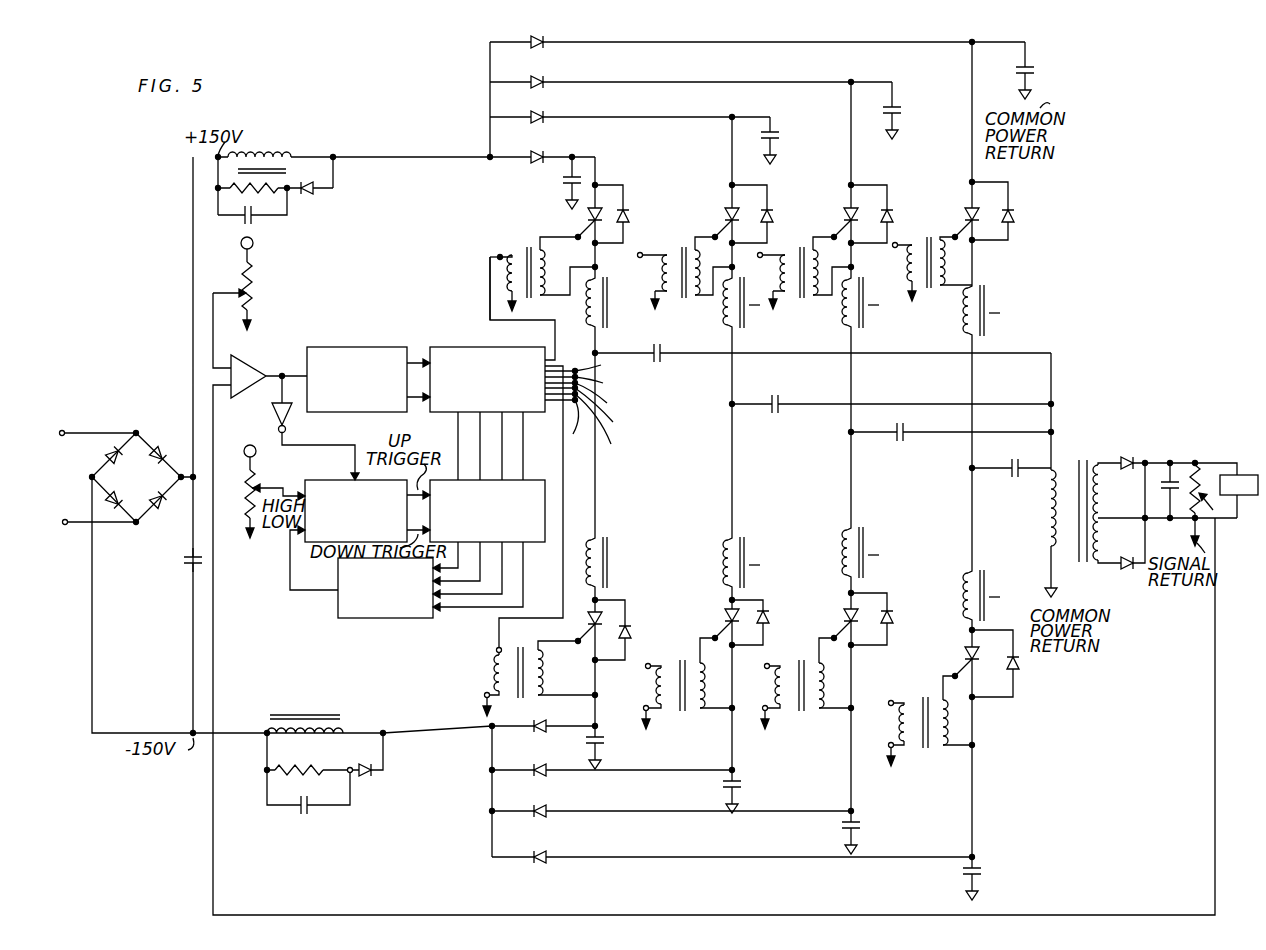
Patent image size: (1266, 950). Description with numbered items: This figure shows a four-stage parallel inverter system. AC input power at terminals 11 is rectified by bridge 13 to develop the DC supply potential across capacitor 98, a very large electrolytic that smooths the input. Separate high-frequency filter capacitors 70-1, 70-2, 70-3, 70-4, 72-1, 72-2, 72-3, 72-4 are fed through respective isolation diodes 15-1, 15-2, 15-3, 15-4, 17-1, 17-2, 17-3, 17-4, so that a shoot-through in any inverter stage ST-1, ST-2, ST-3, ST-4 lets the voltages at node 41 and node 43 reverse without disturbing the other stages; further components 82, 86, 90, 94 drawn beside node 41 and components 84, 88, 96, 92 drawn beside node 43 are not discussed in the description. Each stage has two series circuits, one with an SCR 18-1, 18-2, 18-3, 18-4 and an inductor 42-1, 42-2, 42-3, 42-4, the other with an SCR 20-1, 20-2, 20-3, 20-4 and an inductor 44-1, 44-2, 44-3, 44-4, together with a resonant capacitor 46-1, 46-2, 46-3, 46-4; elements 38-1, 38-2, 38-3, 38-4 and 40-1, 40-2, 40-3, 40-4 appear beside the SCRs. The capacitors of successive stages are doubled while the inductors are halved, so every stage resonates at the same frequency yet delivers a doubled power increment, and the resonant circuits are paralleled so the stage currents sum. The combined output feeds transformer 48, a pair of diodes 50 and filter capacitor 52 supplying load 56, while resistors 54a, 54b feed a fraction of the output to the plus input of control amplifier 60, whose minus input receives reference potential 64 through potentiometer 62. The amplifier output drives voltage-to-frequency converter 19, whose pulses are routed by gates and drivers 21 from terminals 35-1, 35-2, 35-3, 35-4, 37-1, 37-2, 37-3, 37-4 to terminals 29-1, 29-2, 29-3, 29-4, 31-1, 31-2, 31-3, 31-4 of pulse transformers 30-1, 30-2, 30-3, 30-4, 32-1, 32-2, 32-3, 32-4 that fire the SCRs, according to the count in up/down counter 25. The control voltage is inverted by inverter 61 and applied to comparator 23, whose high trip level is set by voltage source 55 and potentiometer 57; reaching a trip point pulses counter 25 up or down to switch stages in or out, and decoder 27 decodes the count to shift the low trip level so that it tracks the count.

The terminals 11 is at (58, 445).
The bridge 13 is at (145, 487).
The capacitor 98 is at (184, 560).
The transformer secondary winding 82 is at (268, 156).
The variable resistor 86 is at (272, 186).
The capacitor 90 is at (252, 226).
The diode 94 is at (314, 194).
The node 41 is at (334, 156).
The reference potential 64 is at (241, 244).
The variable potentiometer 62 is at (252, 293).
The difference amplifier 60 is at (260, 373).
The inverter 61 is at (288, 432).
The voltage source 55 is at (244, 448).
The potentiometer 57 is at (250, 489).
The voltage-to-frequency converter 19 is at (323, 346).
The gates and drivers 21 is at (445, 344).
The voltage comparator 23 is at (324, 478).
The up/down counter 25 is at (540, 478).
The decoder 27 is at (392, 618).
The transformer secondary winding 84 is at (328, 736).
The node 43 is at (383, 732).
The variable resistor 88 is at (312, 768).
The diode 96 is at (366, 777).
The capacitor 92 is at (306, 816).
The isolation diode 15-1 is at (531, 156).
The isolation diode 15-2 is at (531, 118).
The isolation diode 15-3 is at (531, 81).
The isolation diode 15-4 is at (531, 42).
The high-frequency filter capacitor 70-1 is at (582, 177).
The high-frequency filter capacitor 70-2 is at (774, 132).
The high-frequency filter capacitor 70-3 is at (904, 115).
The high-frequency filter capacitor 70-4 is at (1041, 73).
The inverter stage ST-1 is at (546, 213).
The inverter stage ST-2 is at (706, 181).
The inverter stage ST-3 is at (834, 174).
The inverter stage ST-4 is at (955, 176).
The SCR 18-1 is at (592, 222).
The SCR 18-2 is at (728, 216).
The SCR 18-3 is at (846, 213).
The SCR 18-4 is at (960, 214).
The diode 38-1 is at (650, 210).
The diode 38-2 is at (768, 210).
The diode 38-3 is at (890, 210).
The diode 38-4 is at (1012, 216).
The pulse transformer 30-1 is at (549, 271).
The pulse transformer 30-2 is at (688, 268).
The pulse transformer 30-3 is at (808, 268).
The pulse transformer 30-4 is at (934, 260).
The terminal 29-1 is at (498, 255).
The terminal 29-2 is at (623, 256).
The terminal 29-3 is at (753, 256).
The terminal 29-4 is at (876, 246).
The inductor 42-1 is at (594, 326).
The inductor 42-2 is at (732, 328).
The inductor 42-3 is at (852, 328).
The inductor 42-4 is at (974, 328).
The inductor 44-1 is at (592, 544).
The inductor 44-2 is at (734, 540).
The inductor 44-3 is at (851, 531).
The inductor 44-4 is at (971, 570).
The SCR 20-1 is at (590, 615).
The SCR 20-2 is at (724, 617).
The SCR 20-3 is at (843, 616).
The SCR 20-4 is at (962, 653).
The diode 40-1 is at (628, 628).
The diode 40-2 is at (764, 610).
The diode 40-3 is at (892, 610).
The diode 40-4 is at (1020, 665).
The pulse transformer 32-1 is at (540, 669).
The pulse transformer 32-2 is at (688, 683).
The pulse transformer 32-3 is at (807, 683).
The pulse transformer 32-4 is at (931, 721).
The terminal 31-1 is at (490, 665).
The terminal 31-2 is at (646, 669).
The terminal 31-3 is at (766, 669).
The terminal 31-4 is at (876, 720).
The high-frequency filter capacitor 72-1 is at (604, 740).
The high-frequency filter capacitor 72-2 is at (720, 786).
The high-frequency filter capacitor 72-3 is at (841, 824).
The high-frequency filter capacitor 72-4 is at (968, 872).
The isolation diode 17-1 is at (539, 731).
The isolation diode 17-2 is at (539, 778).
The isolation diode 17-3 is at (539, 820).
The isolation diode 17-4 is at (539, 864).
The terminal 35-1 is at (553, 345).
The terminal 35-2 is at (608, 364).
The terminal 35-3 is at (612, 400).
The terminal 35-4 is at (613, 426).
The terminal 37-1 is at (563, 362).
The terminal 37-2 is at (609, 384).
The terminal 37-3 is at (615, 412).
The terminal 37-4 is at (582, 428).
The capacitor 46-1 is at (656, 358).
The capacitor 46-2 is at (774, 414).
The capacitor 46-3 is at (900, 438).
The capacitor 46-4 is at (1012, 475).
The transformer 48 is at (1084, 458).
The diodes 50 is at (1125, 459).
The filter capacitor 52 is at (1172, 472).
The resistor 54a is at (1200, 464).
The resistor 54b is at (1193, 520).
The load 56 is at (1242, 496).